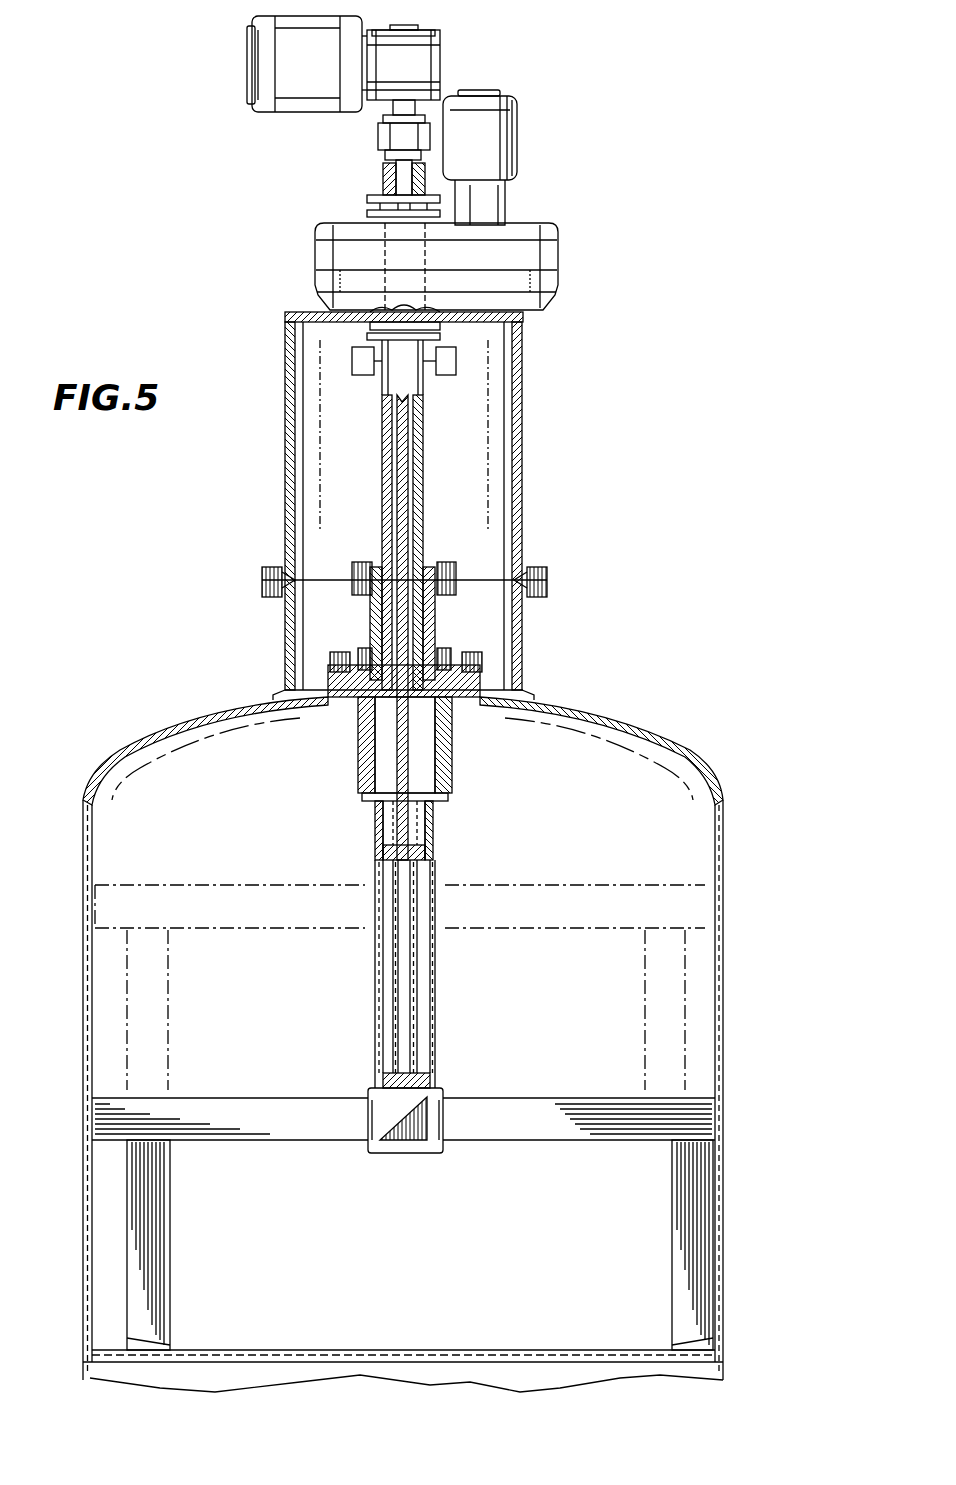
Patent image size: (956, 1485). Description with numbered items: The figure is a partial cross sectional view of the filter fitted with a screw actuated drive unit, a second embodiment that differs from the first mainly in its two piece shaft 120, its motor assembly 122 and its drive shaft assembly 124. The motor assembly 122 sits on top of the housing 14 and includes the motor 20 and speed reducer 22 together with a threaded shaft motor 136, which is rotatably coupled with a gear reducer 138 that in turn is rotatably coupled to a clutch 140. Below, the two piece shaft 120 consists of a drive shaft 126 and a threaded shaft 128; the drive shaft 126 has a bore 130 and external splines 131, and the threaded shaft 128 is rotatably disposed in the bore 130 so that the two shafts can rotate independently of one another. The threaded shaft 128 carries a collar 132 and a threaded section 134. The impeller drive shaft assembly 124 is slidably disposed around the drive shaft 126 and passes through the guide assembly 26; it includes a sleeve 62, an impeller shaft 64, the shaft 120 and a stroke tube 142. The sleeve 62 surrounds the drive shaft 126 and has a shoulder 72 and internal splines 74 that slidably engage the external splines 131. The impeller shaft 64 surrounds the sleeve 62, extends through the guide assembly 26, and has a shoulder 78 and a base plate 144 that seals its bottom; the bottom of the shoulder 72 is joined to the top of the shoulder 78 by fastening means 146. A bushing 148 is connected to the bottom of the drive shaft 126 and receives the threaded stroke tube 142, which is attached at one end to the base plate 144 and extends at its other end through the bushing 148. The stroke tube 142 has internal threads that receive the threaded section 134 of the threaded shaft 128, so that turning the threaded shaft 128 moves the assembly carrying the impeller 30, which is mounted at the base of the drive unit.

The threaded shaft motor 136 is at (285, 72).
The gear reducer 138 is at (440, 55).
The clutch 140 is at (380, 133).
The drive shaft 126 is at (383, 178).
The threaded shaft 128 is at (370, 200).
The motor assembly 122 is at (532, 117).
The motor 20 is at (518, 155).
The speed reducer 22 is at (558, 252).
The housing 14 is at (285, 446).
The two piece shaft 120 is at (437, 443).
The fastening means 146 is at (455, 568).
The shoulder 72 is at (355, 566).
The shoulder 78 is at (352, 597).
The bore 130 is at (385, 632).
The collar 132 is at (435, 615).
The guide assembly 26 is at (470, 730).
The threaded impeller drive shaft assembly 124 is at (477, 823).
The sleeve 62 is at (362, 748).
The threaded section 134 is at (412, 767).
The external splines 131 is at (330, 830).
The internal splines 74 is at (378, 820).
The bushing 148 is at (378, 850).
The impeller shaft 64 is at (437, 945).
The stroke tube 142 is at (418, 980).
The base plate 144 is at (432, 1082).
The impeller 30 is at (647, 1108).